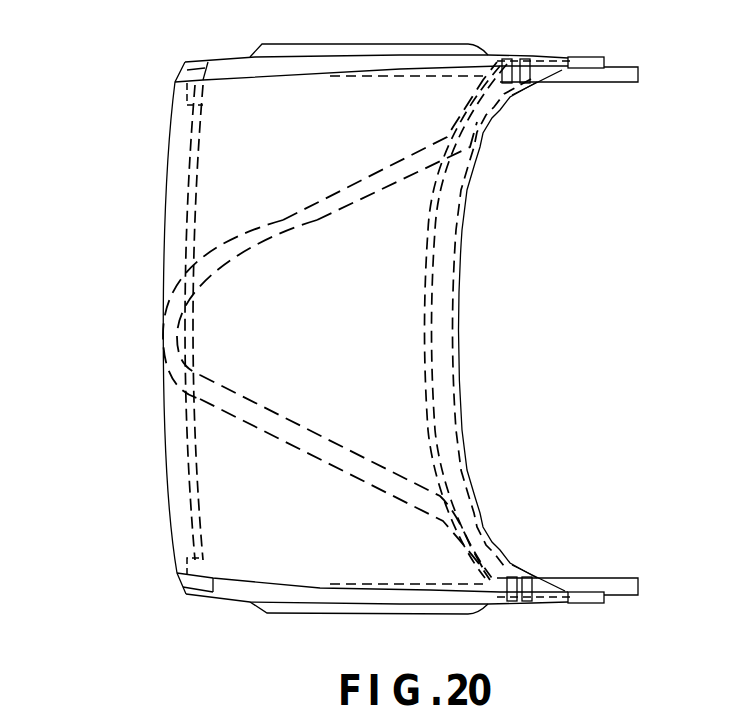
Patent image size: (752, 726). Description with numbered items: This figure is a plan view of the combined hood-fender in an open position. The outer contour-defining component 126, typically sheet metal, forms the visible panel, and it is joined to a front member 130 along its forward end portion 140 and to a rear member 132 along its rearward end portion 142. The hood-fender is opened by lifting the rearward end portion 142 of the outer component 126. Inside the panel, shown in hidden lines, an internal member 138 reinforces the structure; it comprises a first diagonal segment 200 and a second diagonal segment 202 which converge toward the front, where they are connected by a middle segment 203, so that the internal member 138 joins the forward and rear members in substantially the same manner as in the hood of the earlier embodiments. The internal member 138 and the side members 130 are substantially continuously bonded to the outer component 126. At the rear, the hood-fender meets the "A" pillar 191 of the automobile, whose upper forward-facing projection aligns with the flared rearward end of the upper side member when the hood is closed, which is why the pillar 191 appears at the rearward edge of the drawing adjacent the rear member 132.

The outer contour-defining component 126 is at (310, 297).
The front member 130 is at (180, 170).
The rear member 132 is at (443, 225).
The internal member 138 is at (251, 261).
The forward end portion 140 is at (163, 240).
The rearward end portion 142 is at (460, 333).
The "A" pillar 191 is at (591, 583).
The first diagonal segment 200 is at (357, 182).
The second diagonal segment 202 is at (336, 445).
The middle segment 203 is at (155, 355).